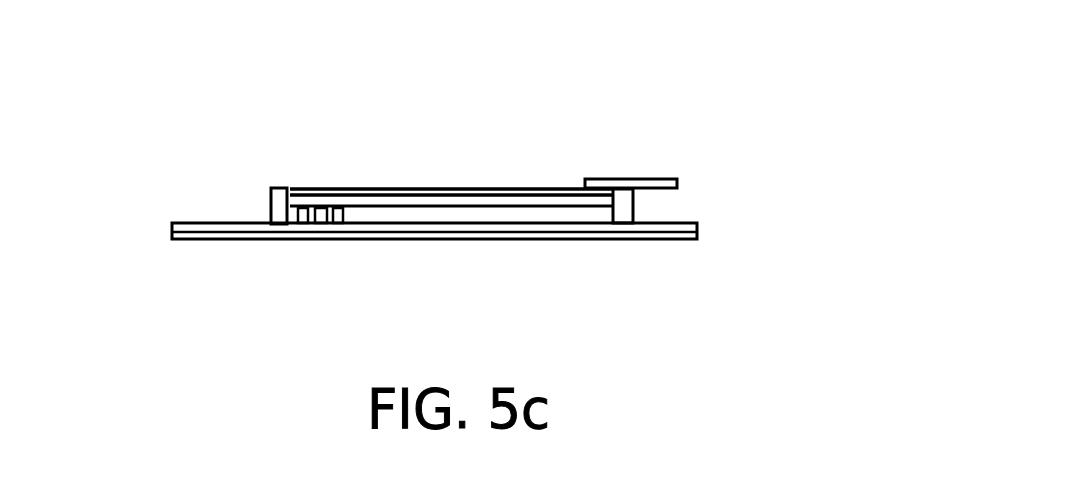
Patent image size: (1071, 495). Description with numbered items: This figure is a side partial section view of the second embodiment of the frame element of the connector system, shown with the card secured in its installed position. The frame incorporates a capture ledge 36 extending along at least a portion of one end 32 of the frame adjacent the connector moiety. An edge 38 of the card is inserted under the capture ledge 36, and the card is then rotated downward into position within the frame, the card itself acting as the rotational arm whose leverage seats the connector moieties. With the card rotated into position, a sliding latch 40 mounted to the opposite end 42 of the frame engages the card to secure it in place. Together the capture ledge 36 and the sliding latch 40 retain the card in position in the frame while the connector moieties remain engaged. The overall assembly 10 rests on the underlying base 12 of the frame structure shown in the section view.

The semiconductor device assembly 10 is at (455, 158).
The substrate 12 is at (658, 240).
The end of the frame 32 is at (271, 205).
The capture ledge 36 is at (300, 198).
The edge of the card 38 is at (320, 193).
The sliding latch 40 is at (660, 181).
The opposite end of the frame 42 is at (633, 210).